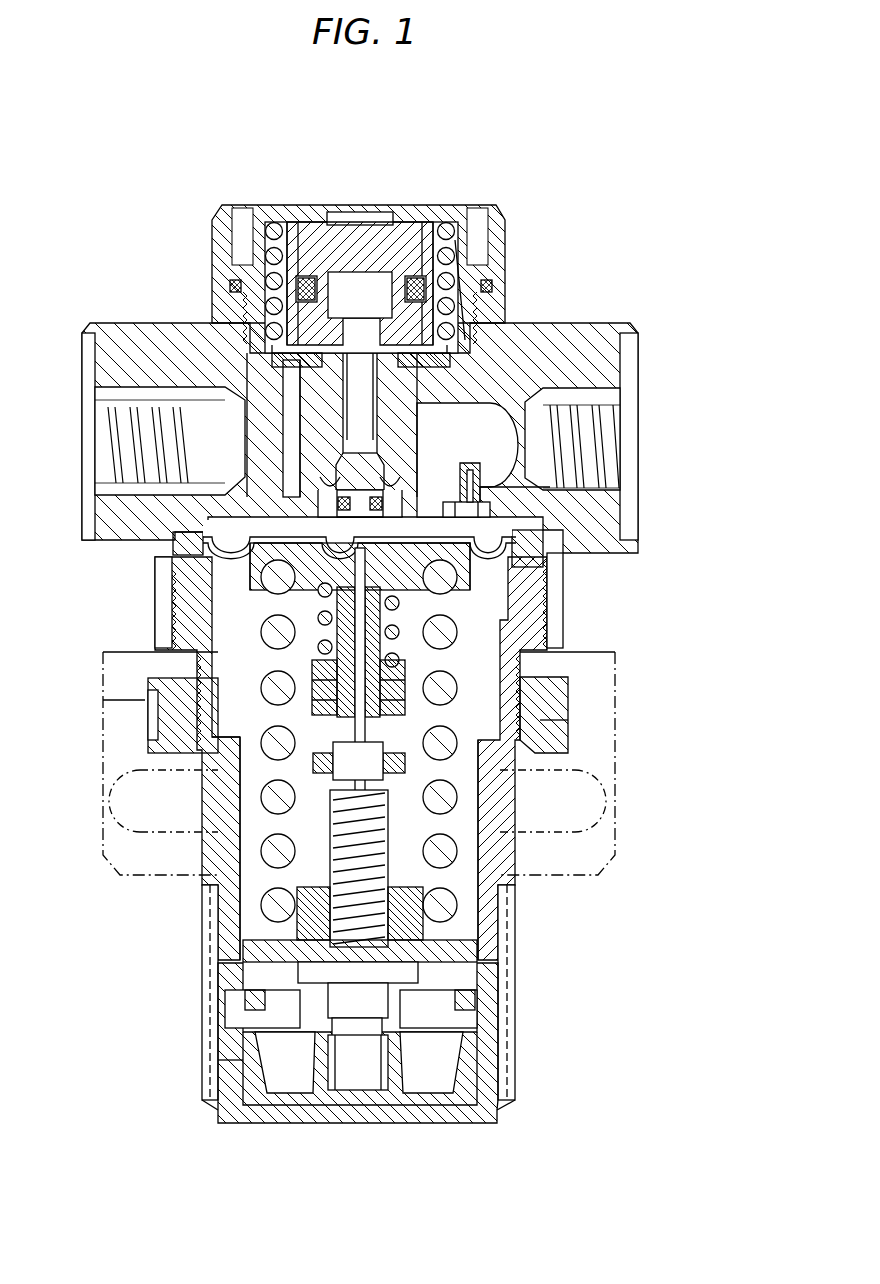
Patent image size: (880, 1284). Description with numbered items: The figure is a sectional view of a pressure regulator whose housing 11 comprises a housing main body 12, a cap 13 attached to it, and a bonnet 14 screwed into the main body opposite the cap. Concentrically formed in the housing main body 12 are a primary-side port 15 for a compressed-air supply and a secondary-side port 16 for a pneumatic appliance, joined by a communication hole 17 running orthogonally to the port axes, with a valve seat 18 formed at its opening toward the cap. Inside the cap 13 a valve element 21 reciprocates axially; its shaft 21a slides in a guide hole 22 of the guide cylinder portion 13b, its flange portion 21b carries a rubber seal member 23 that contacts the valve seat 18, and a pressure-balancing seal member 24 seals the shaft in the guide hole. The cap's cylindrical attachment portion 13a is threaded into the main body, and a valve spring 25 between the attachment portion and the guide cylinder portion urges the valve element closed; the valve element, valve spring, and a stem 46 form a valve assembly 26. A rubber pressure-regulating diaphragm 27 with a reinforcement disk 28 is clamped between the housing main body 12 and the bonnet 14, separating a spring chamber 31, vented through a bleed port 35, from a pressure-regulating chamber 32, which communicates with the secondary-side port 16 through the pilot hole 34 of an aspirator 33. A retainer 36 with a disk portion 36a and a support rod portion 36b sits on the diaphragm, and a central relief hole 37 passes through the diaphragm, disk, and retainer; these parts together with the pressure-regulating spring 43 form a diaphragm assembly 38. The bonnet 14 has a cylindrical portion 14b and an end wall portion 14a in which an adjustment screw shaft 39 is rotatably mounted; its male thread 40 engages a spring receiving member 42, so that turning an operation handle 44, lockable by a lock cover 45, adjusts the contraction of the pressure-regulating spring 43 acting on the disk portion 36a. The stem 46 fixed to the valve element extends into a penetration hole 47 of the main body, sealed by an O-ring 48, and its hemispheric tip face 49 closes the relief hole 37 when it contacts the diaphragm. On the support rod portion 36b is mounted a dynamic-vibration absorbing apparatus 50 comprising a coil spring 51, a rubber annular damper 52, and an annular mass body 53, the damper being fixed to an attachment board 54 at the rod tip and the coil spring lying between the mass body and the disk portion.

The housing 11 is at (606, 318).
The housing main body 12 is at (562, 338).
The cap 13 is at (455, 215).
The cylindrical attachment portion 13a is at (243, 312).
The guide cylinder portion 13b is at (232, 286).
The bonnet 14 is at (487, 922).
The end wall portion 14a is at (462, 975).
The cylindrical portion 14b is at (245, 765).
The primary-side port 15 is at (125, 432).
The secondary-side port 16 is at (590, 397).
The communication hole 17 is at (355, 462).
The valve seat 18 is at (290, 378).
The valve element 21 is at (317, 262).
The shaft 21a is at (343, 235).
The flange portion 21b is at (272, 340).
The guide hole 22 is at (415, 276).
The seal member 23 is at (433, 360).
The pressure-balancing seal member 24 is at (480, 265).
The valve spring 25 is at (272, 224).
The valve assembly 26 is at (362, 285).
The pressure-regulating diaphragm 27 is at (500, 558).
The reinforcement disk 28 is at (467, 563).
The spring chamber 31 is at (462, 847).
The pressure-regulating chamber 32 is at (520, 537).
The aspirator 33 is at (430, 518).
The pilot hole 34 is at (500, 496).
The bleed port 35 is at (485, 836).
The retainer 36 is at (455, 565).
The disk portion 36a is at (270, 582).
The support rod portion 36b is at (290, 690).
The relief hole 37 is at (400, 640).
The diaphragm assembly 38 is at (400, 762).
The adjustment screw shaft 39 is at (355, 1055).
The male thread 40 is at (335, 860).
The spring receiving member 42 is at (300, 950).
The pressure-regulating spring 43 is at (185, 848).
The operation handle 44 is at (327, 1092).
The lock cover 45 is at (488, 1085).
The stem 46 is at (497, 472).
The penetration hole 47 is at (325, 492).
The O-ring 48 is at (480, 508).
The tip face 49 is at (310, 680).
The dynamic-vibration absorbing apparatus 50 is at (400, 705).
The coil spring 51 is at (395, 680).
The annular damper 52 is at (430, 712).
The annular mass body 53 is at (418, 690).
The attachment board 54 is at (460, 785).